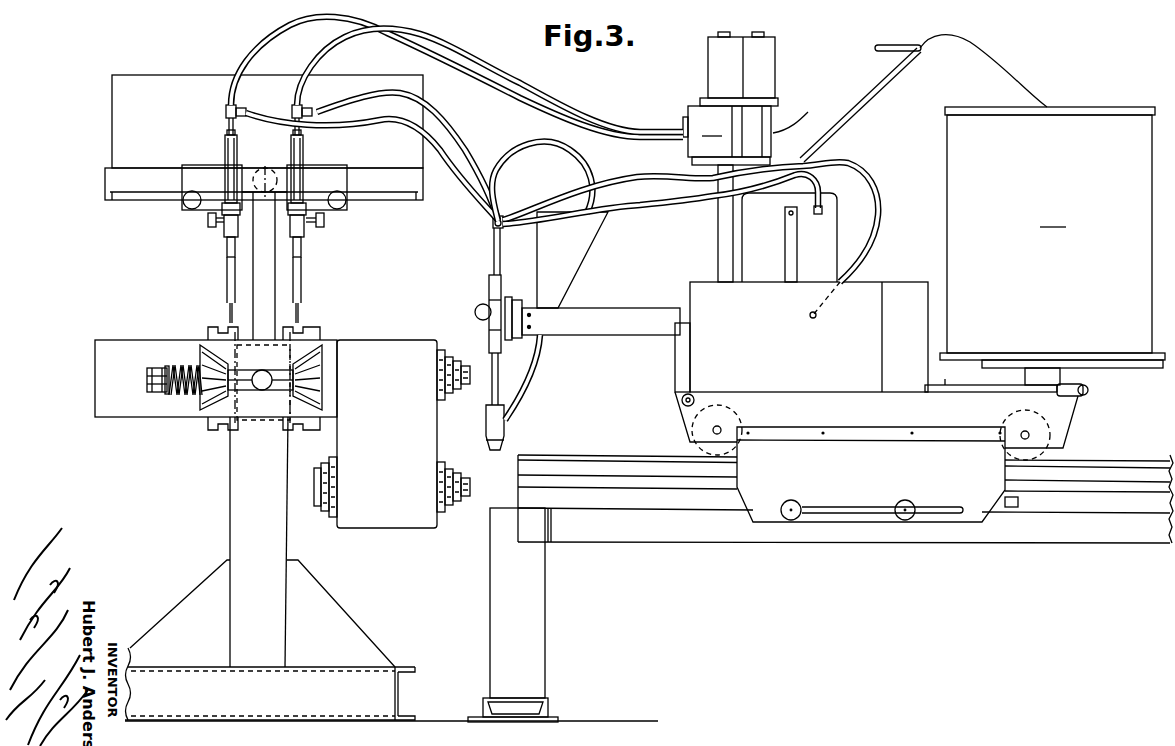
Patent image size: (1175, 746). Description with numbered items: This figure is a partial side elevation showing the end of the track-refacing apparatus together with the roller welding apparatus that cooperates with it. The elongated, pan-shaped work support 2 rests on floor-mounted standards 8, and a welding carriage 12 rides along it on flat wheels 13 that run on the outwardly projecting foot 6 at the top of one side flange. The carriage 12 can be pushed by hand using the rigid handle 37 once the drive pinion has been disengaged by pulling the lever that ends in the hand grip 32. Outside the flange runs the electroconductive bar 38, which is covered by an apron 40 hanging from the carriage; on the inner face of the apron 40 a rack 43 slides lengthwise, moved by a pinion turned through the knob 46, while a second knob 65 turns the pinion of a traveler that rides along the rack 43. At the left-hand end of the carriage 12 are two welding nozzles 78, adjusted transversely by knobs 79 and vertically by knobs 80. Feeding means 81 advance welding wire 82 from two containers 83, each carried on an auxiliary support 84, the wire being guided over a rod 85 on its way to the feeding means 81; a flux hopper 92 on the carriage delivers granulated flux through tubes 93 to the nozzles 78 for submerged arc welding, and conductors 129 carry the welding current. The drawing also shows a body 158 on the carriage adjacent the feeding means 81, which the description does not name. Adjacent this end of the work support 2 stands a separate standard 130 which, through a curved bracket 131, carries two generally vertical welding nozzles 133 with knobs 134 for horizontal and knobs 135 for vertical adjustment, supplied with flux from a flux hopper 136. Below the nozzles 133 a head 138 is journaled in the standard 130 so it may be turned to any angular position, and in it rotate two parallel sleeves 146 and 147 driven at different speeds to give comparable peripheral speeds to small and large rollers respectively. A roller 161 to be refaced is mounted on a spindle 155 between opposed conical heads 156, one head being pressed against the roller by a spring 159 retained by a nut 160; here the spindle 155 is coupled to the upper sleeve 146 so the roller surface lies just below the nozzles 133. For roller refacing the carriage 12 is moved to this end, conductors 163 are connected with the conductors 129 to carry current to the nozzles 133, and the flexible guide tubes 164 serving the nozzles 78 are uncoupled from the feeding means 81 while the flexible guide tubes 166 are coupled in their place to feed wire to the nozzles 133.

The work support 2 is at (1054, 514).
The foot 6 is at (586, 458).
The standard 8 is at (533, 638).
The carriage 12 is at (1064, 424).
The flat wheels 13 is at (693, 448).
The hand grip 32 is at (1086, 395).
The handle 37 is at (680, 403).
The bar 38 is at (597, 488).
The apron 40 is at (763, 521).
The rack 43 is at (1010, 508).
The knob 46 is at (793, 522).
The knob 65 is at (906, 522).
The welding nozzles 78 is at (489, 300).
The knobs 79 is at (508, 340).
The knobs 80 is at (476, 311).
The feeding means 81 is at (768, 118).
The welding wire 82 is at (1008, 78).
The containers 83 is at (1050, 230).
The auxiliary support 84 is at (1110, 370).
The rod 85 is at (868, 102).
The flux hopper 92 is at (580, 250).
The tubes 93 is at (528, 374).
The conductors 129 is at (641, 178).
The standard 130 is at (230, 505).
The curved bracket 131 is at (268, 286).
The welding nozzles 133 is at (222, 232).
The knobs 134 is at (183, 204).
The knobs 135 is at (205, 220).
The flux hopper 136 is at (186, 80).
The head 138 is at (97, 343).
The sleeve 146 is at (442, 375).
The sleeve 147 is at (442, 487).
The spindle 155 is at (232, 385).
The conical heads 156 is at (210, 345).
The truck body 158 is at (874, 292).
The spring 159 is at (172, 393).
The nut 160 is at (158, 368).
The roller 161 is at (280, 436).
The conductors 163 is at (446, 146).
The flexible guide tubes 164 is at (562, 143).
The flexible guide tubes 166 is at (538, 90).